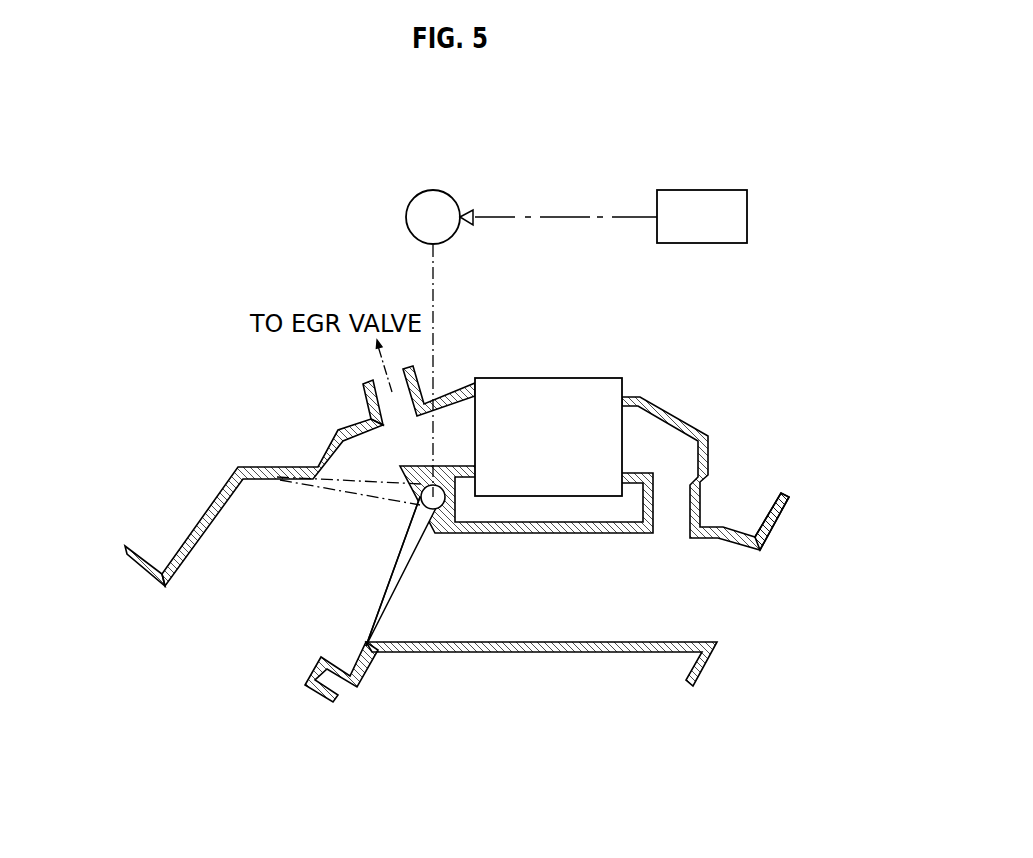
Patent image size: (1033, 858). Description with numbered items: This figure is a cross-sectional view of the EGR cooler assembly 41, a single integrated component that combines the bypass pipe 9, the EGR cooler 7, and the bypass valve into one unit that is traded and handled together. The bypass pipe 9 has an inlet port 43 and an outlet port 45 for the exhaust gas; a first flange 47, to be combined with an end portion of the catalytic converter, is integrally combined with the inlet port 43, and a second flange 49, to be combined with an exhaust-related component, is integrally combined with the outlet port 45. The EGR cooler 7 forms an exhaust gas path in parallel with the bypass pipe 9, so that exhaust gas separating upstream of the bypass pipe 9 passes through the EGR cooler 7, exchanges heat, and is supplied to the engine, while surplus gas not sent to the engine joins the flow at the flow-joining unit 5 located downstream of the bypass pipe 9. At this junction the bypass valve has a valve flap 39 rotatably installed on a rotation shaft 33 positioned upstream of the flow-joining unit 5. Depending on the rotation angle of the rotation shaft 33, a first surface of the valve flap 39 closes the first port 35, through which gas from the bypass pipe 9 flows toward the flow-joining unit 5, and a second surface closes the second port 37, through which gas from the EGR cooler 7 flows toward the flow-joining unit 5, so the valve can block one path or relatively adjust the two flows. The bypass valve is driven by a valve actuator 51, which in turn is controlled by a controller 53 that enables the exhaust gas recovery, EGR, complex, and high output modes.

The flow-joining unit 5 is at (287, 555).
The EGR cooler 7 is at (592, 378).
The bypass pipe 9 is at (578, 652).
The rotation shaft 33 is at (440, 487).
The first port 35 is at (417, 577).
The second port 37 is at (338, 428).
The valve flap 39 is at (387, 593).
The EGR cooler assembly 41 is at (720, 408).
The inlet port 43 is at (743, 602).
The outlet port 45 is at (245, 643).
The first flange 47 is at (783, 493).
The second flange 49 is at (125, 546).
The valve actuator 51 is at (433, 190).
The controller 53 is at (702, 190).